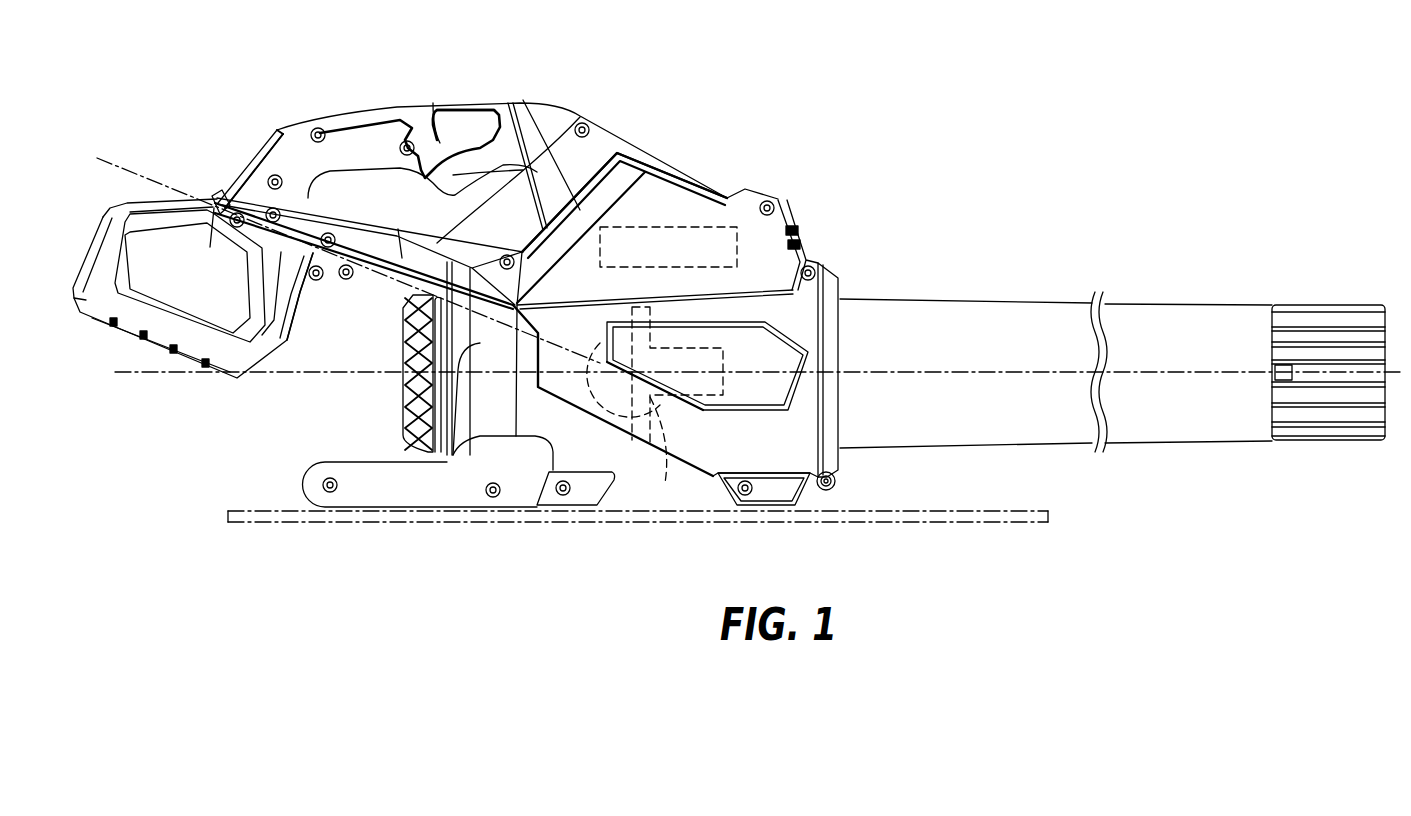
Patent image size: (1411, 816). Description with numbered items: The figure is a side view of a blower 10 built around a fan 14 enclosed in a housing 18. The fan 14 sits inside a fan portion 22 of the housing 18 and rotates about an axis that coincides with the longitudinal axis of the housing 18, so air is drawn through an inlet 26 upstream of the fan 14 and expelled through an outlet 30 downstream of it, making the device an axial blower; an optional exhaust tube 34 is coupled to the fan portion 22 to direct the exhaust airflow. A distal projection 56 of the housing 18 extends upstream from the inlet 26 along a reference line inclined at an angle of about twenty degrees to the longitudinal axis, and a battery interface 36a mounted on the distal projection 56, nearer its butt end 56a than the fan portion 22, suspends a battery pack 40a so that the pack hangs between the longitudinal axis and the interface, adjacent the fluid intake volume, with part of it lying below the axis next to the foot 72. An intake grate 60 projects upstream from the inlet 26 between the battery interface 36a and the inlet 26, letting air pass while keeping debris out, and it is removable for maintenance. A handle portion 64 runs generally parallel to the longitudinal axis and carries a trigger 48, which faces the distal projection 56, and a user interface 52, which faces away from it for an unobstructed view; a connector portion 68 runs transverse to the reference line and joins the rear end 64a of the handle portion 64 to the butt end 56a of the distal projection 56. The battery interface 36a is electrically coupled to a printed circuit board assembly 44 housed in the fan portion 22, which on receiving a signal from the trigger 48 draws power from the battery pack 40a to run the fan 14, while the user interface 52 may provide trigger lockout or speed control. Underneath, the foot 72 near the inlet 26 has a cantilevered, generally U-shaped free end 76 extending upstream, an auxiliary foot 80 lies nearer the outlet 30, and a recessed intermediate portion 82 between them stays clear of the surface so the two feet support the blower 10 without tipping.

The blower 10 is at (968, 106).
The fan 14 is at (665, 483).
The housing 18 is at (753, 230).
The fan portion 22 is at (709, 336).
The inlet 26 is at (386, 394).
The outlet 30 is at (856, 279).
The exhaust tube 34 is at (957, 310).
The battery interface 36a is at (282, 258).
The battery pack 40a is at (185, 285).
The printed circuit board assembly 44 is at (702, 226).
The trigger 48 is at (500, 150).
The user interface 52 is at (467, 107).
The distal projection 56 is at (578, 195).
The butt end 56a is at (213, 182).
The intake grate 60 is at (403, 425).
The handle portion 64 is at (440, 133).
The rear end 64a is at (288, 105).
The connector portion 68 is at (214, 197).
The foot 72 is at (502, 512).
The free end 76 is at (320, 480).
The auxiliary foot 80 is at (805, 495).
The intermediate portion 82 is at (680, 490).